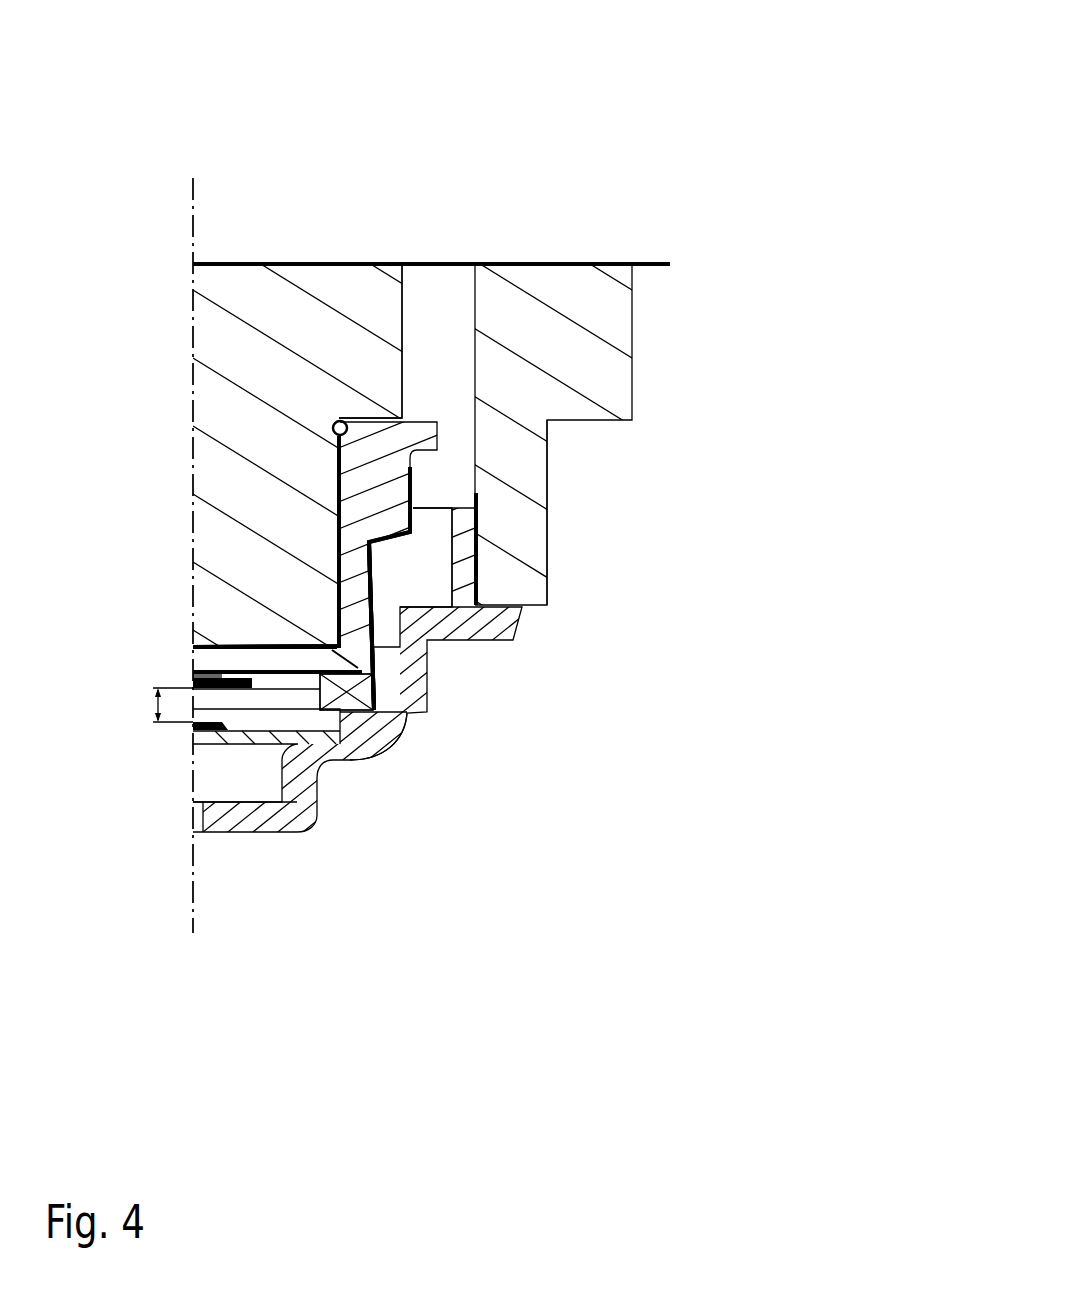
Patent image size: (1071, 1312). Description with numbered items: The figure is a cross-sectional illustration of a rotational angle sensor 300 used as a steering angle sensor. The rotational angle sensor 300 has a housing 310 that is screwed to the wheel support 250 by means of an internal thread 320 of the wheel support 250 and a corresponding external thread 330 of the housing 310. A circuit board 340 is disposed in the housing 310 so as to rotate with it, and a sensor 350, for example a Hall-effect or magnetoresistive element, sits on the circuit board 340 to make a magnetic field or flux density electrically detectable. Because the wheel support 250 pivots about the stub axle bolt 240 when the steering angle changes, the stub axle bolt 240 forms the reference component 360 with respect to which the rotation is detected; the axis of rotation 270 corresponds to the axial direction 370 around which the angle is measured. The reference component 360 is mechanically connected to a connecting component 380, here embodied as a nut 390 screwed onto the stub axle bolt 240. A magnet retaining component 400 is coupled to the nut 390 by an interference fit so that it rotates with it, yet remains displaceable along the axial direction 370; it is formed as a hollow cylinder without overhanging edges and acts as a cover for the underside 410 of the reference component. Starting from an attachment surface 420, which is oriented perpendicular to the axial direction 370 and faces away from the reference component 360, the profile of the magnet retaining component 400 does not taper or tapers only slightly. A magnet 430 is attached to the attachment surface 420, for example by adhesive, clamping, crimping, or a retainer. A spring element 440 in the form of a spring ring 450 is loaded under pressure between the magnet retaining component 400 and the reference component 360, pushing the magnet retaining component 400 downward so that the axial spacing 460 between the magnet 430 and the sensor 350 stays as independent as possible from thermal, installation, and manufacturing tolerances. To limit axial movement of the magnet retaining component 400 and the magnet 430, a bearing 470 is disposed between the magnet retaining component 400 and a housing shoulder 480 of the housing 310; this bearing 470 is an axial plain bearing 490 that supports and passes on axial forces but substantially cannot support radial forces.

The rotational angle sensor 300 is at (768, 55).
The stub axle bolt 240 is at (275, 295).
The reference component 360 is at (322, 305).
The axis of rotation 270 is at (195, 207).
The axial direction 370 is at (285, 527).
The wheel support 250 is at (547, 432).
The internal thread 320 is at (478, 496).
The external thread 330 is at (477, 523).
The connecting component 380 is at (343, 570).
The nut 390 is at (454, 573).
The magnet retaining component 400 is at (398, 650).
The underside 410 is at (193, 654).
The attachment surface 420 is at (233, 672).
The magnet 430 is at (192, 676).
The spring element 440 is at (373, 678).
The spring ring 450 is at (572, 626).
The axial spacing 460 is at (156, 704).
The bearing 470 is at (377, 703).
The axial plain bearing 490 is at (496, 705).
The housing shoulder 480 is at (363, 713).
The sensor 350 is at (192, 724).
The circuit board 340 is at (192, 733).
The housing 310 is at (240, 822).